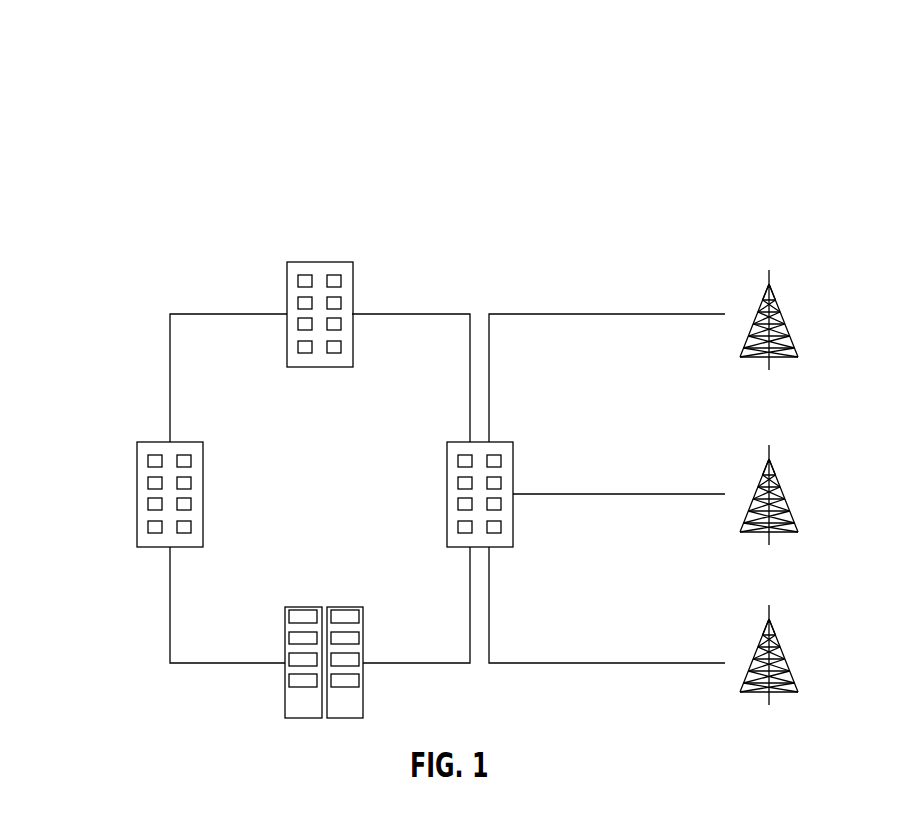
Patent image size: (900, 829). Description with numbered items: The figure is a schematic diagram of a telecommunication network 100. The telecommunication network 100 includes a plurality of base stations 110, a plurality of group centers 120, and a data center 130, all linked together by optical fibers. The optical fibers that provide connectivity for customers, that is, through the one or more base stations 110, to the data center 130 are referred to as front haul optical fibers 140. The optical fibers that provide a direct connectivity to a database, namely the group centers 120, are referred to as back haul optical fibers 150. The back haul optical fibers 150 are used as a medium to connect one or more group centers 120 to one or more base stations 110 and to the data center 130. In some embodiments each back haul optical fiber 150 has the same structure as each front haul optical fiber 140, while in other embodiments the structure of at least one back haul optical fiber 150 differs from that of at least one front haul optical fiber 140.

The telecommunication network 100 is at (132, 131).
The base station 110 is at (787, 328).
The group center 120 is at (300, 261).
The data center 130 is at (303, 606).
The front haul optical fiber 140 is at (167, 650).
The back haul optical fiber 150 is at (197, 312).